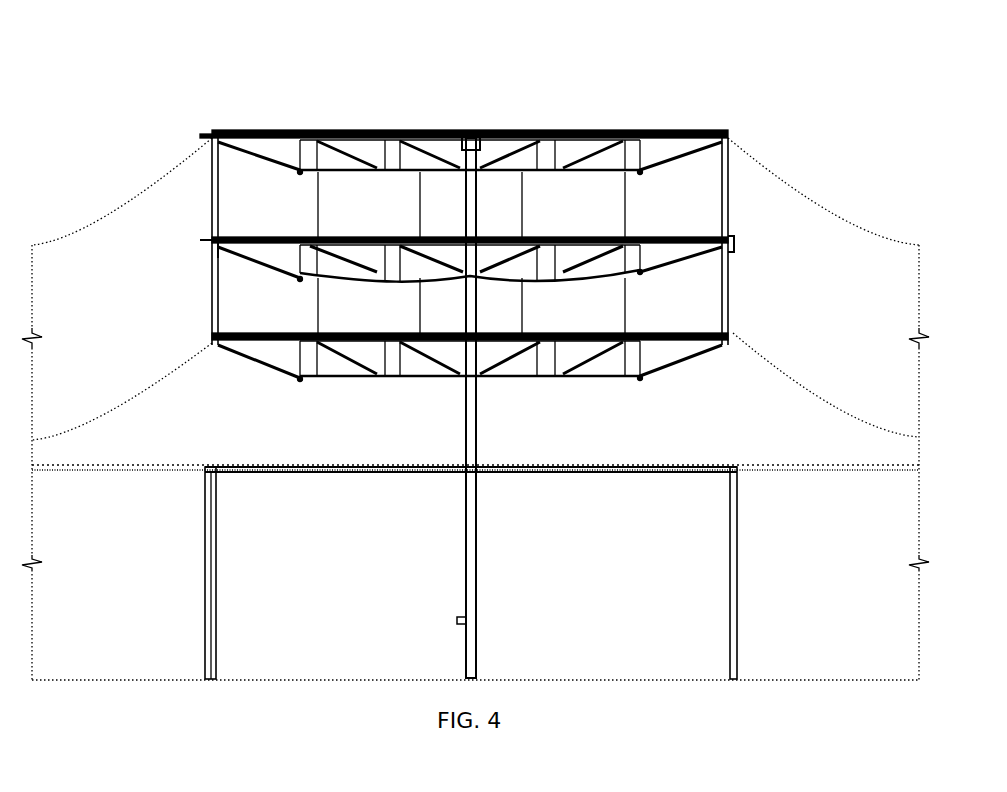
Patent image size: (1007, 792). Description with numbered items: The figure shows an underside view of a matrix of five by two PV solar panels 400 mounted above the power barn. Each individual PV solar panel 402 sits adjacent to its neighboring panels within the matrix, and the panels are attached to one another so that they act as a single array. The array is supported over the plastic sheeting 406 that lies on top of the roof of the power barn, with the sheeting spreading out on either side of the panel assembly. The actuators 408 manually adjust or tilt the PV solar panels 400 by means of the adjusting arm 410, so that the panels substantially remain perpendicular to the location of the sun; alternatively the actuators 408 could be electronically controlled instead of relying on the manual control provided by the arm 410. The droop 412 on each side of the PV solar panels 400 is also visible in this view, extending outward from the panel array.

The PV solar panels 400 is at (209, 88).
The PV solar panel 402 is at (437, 214).
The plastic sheeting 406 is at (103, 222).
The actuators 408 is at (500, 163).
The adjusting arm 410 is at (477, 568).
The droop 412 is at (78, 430).